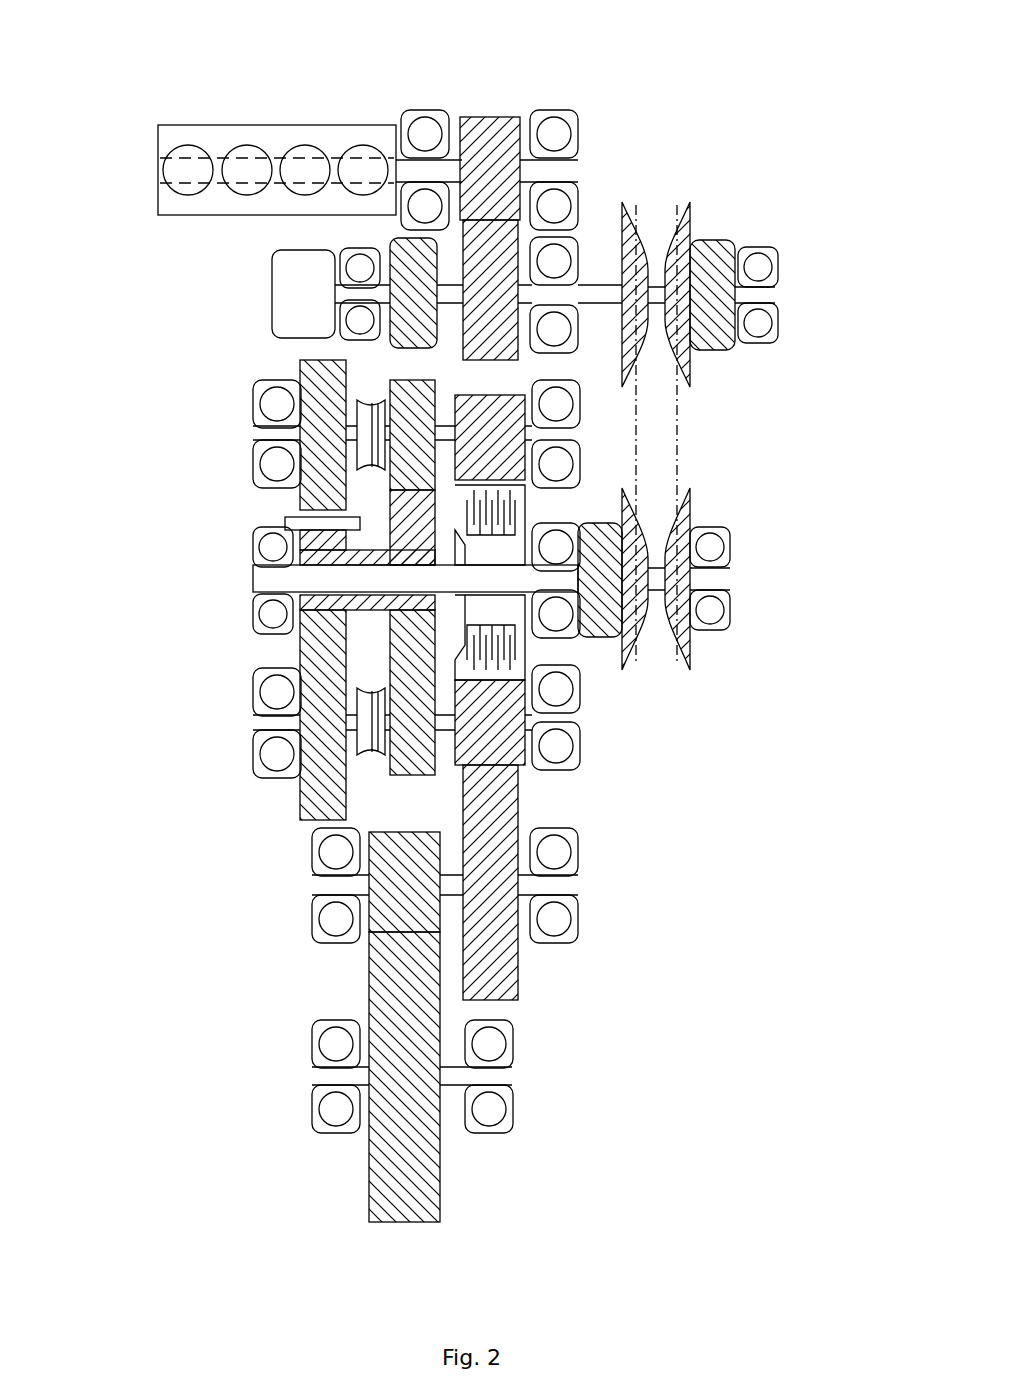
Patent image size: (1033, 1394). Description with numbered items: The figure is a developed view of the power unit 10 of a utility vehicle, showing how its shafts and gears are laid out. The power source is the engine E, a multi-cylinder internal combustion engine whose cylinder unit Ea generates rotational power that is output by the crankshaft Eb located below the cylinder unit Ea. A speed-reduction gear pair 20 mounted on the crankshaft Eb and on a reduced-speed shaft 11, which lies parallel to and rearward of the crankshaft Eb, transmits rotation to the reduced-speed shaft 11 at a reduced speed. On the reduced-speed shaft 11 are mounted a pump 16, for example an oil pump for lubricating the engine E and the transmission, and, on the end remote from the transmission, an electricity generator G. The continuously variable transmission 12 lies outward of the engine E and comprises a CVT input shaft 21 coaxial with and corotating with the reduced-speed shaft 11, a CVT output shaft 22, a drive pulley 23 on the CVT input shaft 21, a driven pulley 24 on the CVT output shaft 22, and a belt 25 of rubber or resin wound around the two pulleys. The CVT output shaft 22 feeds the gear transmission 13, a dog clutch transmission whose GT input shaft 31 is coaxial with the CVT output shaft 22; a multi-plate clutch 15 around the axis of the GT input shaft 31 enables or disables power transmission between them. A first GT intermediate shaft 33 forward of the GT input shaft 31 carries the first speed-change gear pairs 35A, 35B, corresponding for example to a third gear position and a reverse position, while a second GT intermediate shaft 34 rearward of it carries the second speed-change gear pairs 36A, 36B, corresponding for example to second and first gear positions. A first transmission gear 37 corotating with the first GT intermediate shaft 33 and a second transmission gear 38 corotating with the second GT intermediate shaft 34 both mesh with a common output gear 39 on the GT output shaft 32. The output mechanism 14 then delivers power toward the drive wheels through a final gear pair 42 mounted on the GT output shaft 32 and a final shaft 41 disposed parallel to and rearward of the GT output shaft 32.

The engine E is at (185, 125).
The cylinder unit Ea is at (247, 125).
The crankshaft Eb is at (570, 172).
The electricity generator G is at (272, 282).
The power unit 10 is at (755, 95).
The reduced-speed shaft 11 is at (583, 295).
The continuously variable transmission 12 is at (757, 218).
The gear transmission 13 is at (172, 685).
The output mechanism 14 is at (322, 993).
The clutch 15 is at (530, 655).
The pump 16 is at (400, 250).
The speed-reduction gear pair 20 is at (488, 135).
The CVT input shaft 21 is at (770, 292).
The CVT output shaft 22 is at (720, 572).
The drive pulley 23 is at (690, 205).
The driven pulley 24 is at (683, 663).
The belt 25 is at (677, 448).
The GT input shaft 31 is at (262, 578).
The GT output shaft 32 is at (318, 882).
The first GT intermediate shaft 33 is at (262, 432).
The second GT intermediate shaft 34 is at (262, 722).
The first speed-change gear pair 35A is at (405, 477).
The first speed-change gear pair 35B is at (303, 352).
The second speed-change gear pair 36A is at (407, 633).
The second speed-change gear pair 36B is at (300, 790).
The first transmission gear 37 is at (510, 408).
The second transmission gear 38 is at (505, 745).
The common output gear 39 is at (505, 965).
The final shaft 41 is at (505, 1075).
The final gear pair 42 is at (370, 1163).